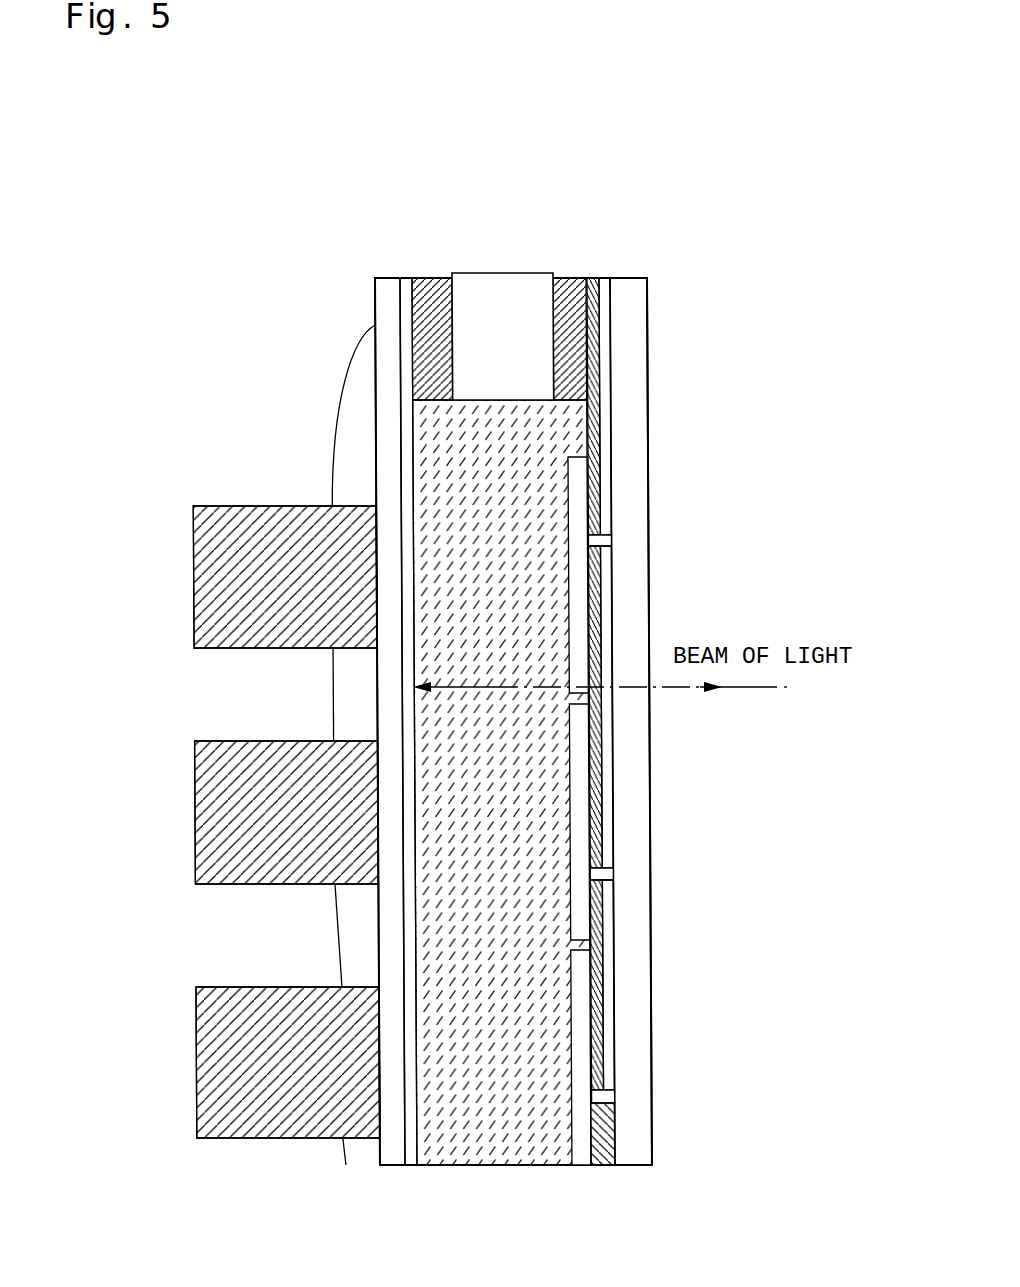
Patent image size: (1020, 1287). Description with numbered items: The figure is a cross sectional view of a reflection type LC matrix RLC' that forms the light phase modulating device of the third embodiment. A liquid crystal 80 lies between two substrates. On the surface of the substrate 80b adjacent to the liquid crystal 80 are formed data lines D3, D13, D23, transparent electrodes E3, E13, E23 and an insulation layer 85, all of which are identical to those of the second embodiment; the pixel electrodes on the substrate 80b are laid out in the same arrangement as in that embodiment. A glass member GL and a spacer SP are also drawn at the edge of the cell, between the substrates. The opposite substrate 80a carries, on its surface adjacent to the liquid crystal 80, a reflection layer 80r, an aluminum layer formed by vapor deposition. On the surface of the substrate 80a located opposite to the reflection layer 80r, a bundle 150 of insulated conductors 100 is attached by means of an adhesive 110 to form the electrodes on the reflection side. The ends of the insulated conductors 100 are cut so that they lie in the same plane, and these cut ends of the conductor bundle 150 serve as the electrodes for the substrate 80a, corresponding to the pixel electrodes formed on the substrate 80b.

The liquid crystal 80 is at (525, 1068).
The substrate 80a is at (387, 295).
The reflection layer 80r is at (407, 286).
The substrate 80b is at (627, 658).
The insulation layer 85 is at (602, 278).
The glass member GL is at (445, 282).
The spacer SP is at (537, 287).
The data line D3 is at (603, 345).
The data line D13 is at (608, 775).
The dielectric layer D23 is at (608, 1017).
The transparent electrode E3 is at (578, 490).
The transparent electrode E13 is at (578, 845).
The electrode E23 is at (583, 1127).
The adhesive 110 is at (356, 404).
The insulated conductor 100 is at (282, 537).
The bundle of insulated conductors 150 is at (63, 437).
The reflection type LC matrix RLC' is at (566, 630).